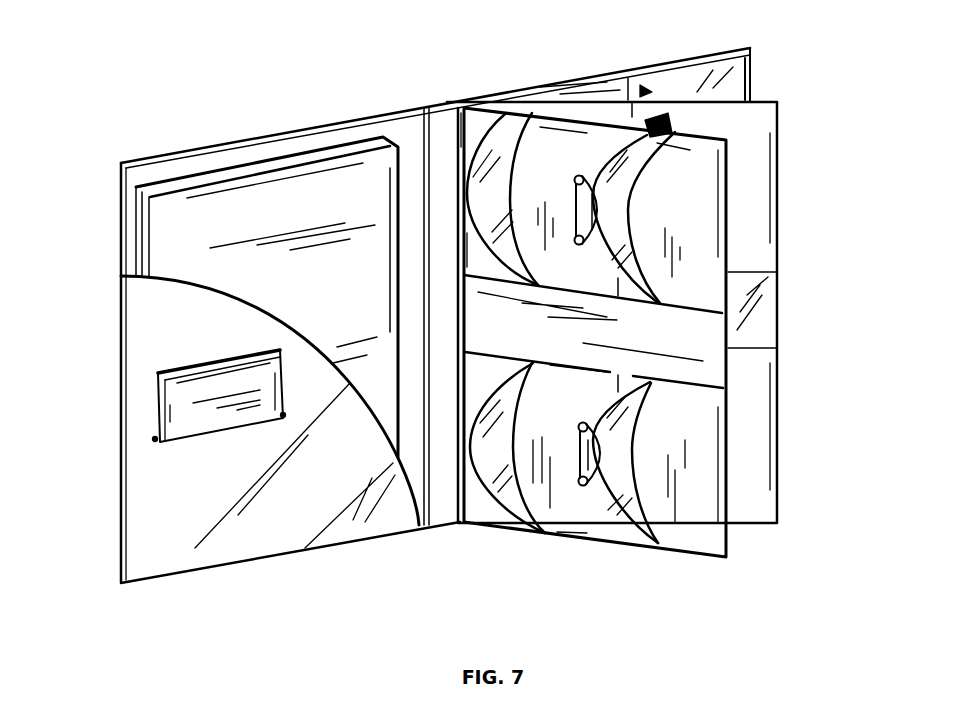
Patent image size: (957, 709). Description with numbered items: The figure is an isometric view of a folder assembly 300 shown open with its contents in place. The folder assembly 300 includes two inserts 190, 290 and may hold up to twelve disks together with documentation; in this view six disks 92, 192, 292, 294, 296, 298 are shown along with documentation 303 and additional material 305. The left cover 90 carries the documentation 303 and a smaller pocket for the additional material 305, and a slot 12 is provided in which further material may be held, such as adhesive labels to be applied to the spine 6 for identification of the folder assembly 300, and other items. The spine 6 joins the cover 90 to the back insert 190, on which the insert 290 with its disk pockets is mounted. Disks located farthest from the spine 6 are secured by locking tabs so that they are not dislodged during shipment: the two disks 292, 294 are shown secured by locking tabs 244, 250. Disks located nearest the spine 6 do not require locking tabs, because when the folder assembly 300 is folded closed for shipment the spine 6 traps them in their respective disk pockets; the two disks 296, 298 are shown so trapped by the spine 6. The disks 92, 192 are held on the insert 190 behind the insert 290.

The folder assembly 300 is at (183, 47).
The front cover 90 is at (317, 127).
The spine 6 is at (442, 115).
The documentation 303 is at (167, 245).
The additional material 305 is at (180, 398).
The slot 12 is at (158, 437).
The insert 190 is at (777, 385).
The disk 192 is at (660, 115).
The disk 92 is at (647, 90).
The insert 290 is at (727, 535).
The disk 296 is at (495, 93).
The disk 292 is at (628, 235).
The disk 298 is at (502, 490).
The disk 294 is at (608, 510).
The locking tab 244 is at (593, 215).
The locking tab 250 is at (585, 457).